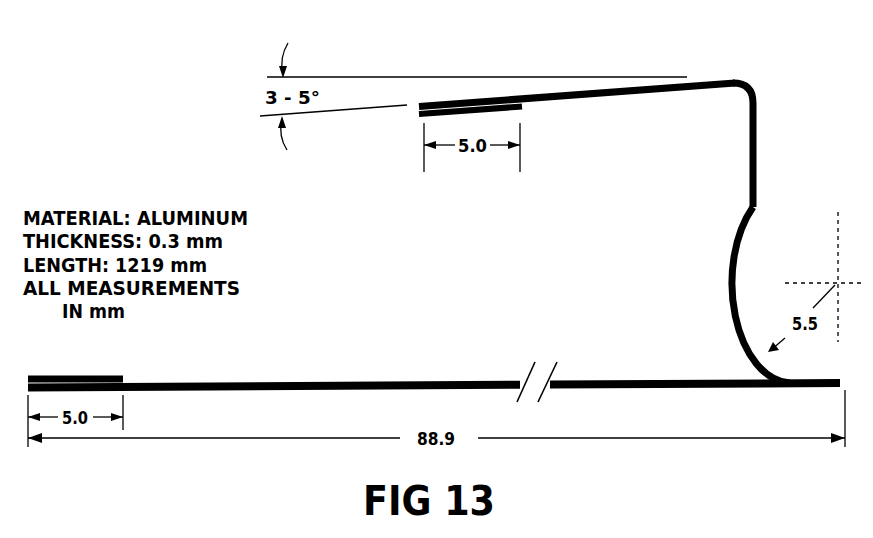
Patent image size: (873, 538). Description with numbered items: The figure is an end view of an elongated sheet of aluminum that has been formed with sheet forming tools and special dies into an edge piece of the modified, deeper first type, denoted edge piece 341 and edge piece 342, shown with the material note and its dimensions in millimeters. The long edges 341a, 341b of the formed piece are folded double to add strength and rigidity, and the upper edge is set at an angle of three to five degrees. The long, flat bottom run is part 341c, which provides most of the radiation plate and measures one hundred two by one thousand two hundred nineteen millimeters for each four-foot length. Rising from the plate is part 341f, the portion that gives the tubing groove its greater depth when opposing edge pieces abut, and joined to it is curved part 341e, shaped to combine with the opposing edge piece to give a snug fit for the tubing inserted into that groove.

The edge piece 341 is at (620, 58).
The edge piece 342 is at (434, 214).
The long edge 341a is at (567, 100).
The long edge 341b is at (472, 100).
The radiation plate part 341c is at (412, 381).
The tubing-fit part 341e is at (766, 267).
The groove-depth part 341f is at (785, 145).